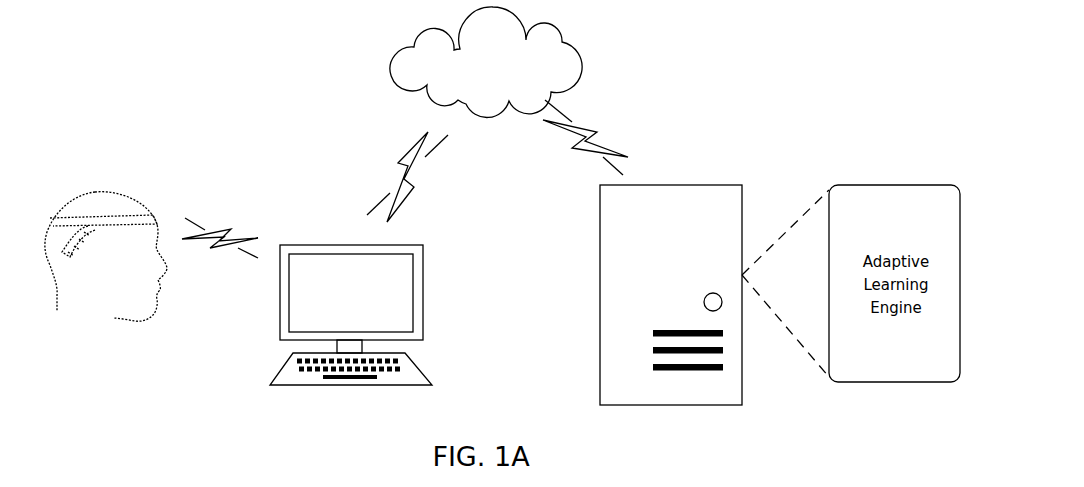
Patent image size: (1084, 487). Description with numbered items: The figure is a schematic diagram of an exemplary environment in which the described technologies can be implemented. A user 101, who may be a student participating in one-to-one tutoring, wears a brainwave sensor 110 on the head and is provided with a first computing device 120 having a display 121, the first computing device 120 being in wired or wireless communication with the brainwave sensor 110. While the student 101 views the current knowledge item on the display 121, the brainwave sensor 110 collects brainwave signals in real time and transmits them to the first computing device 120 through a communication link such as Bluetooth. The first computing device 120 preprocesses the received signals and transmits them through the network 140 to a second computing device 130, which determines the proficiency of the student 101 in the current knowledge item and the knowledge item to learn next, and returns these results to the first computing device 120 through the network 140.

The user 101 is at (95, 190).
The brainwave sensor 110 is at (153, 210).
The first computing device 120 is at (384, 298).
The display 121 is at (362, 262).
The second computing device 130 is at (702, 185).
The network 140 is at (483, 69).